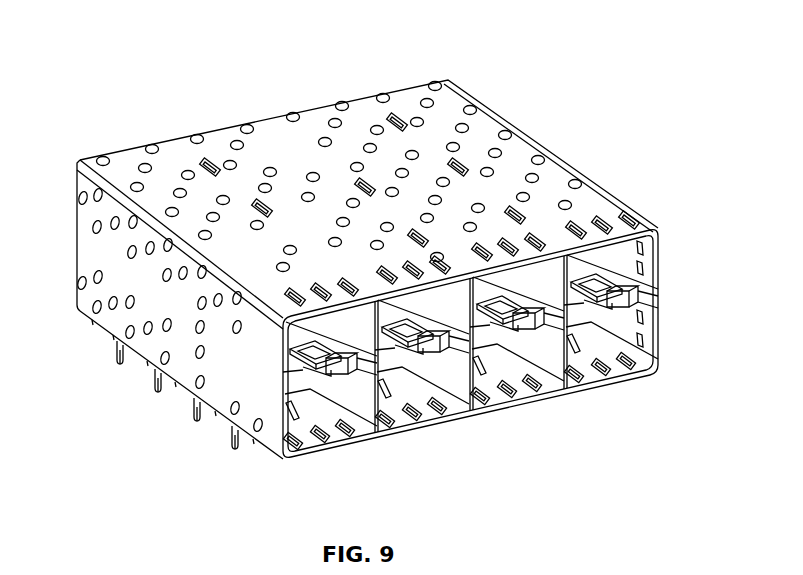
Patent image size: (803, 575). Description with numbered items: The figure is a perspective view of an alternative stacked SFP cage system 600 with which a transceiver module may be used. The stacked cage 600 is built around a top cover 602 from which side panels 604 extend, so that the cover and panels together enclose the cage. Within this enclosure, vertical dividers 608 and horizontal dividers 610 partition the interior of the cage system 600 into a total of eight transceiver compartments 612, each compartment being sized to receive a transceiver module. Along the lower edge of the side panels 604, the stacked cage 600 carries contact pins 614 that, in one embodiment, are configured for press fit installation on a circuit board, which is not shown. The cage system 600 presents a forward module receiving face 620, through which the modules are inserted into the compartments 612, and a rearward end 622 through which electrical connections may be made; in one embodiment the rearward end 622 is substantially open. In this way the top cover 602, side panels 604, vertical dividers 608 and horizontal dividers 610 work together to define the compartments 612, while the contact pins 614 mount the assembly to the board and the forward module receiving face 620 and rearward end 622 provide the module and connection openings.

The stacked SFP cage system 600 is at (134, 37).
The top cover 602 is at (268, 126).
The side panels 604 is at (90, 239).
The vertical dividers 608 is at (500, 398).
The horizontal dividers 610 is at (355, 372).
The transceiver compartments 612 is at (645, 263).
The contact pins 614 is at (158, 392).
The forward module receiving face 620 is at (632, 390).
The rearward end 622 is at (141, 137).